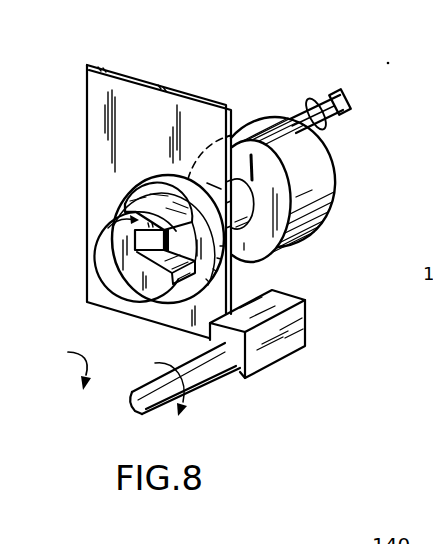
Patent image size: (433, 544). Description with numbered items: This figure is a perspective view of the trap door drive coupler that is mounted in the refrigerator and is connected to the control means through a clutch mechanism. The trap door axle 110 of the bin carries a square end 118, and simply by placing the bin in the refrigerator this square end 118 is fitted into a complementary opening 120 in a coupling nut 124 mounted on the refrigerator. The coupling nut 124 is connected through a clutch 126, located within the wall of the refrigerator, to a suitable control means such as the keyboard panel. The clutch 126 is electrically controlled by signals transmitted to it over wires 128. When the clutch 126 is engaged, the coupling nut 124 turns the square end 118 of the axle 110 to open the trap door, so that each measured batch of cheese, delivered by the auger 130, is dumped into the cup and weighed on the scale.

The trap door axle 110 is at (202, 370).
The square end 118 is at (277, 352).
The opening 120 is at (135, 251).
The coupling nut 124 is at (133, 270).
The clutch 126 is at (298, 243).
The wires 128 is at (343, 123).
The auger 130 is at (58, 369).